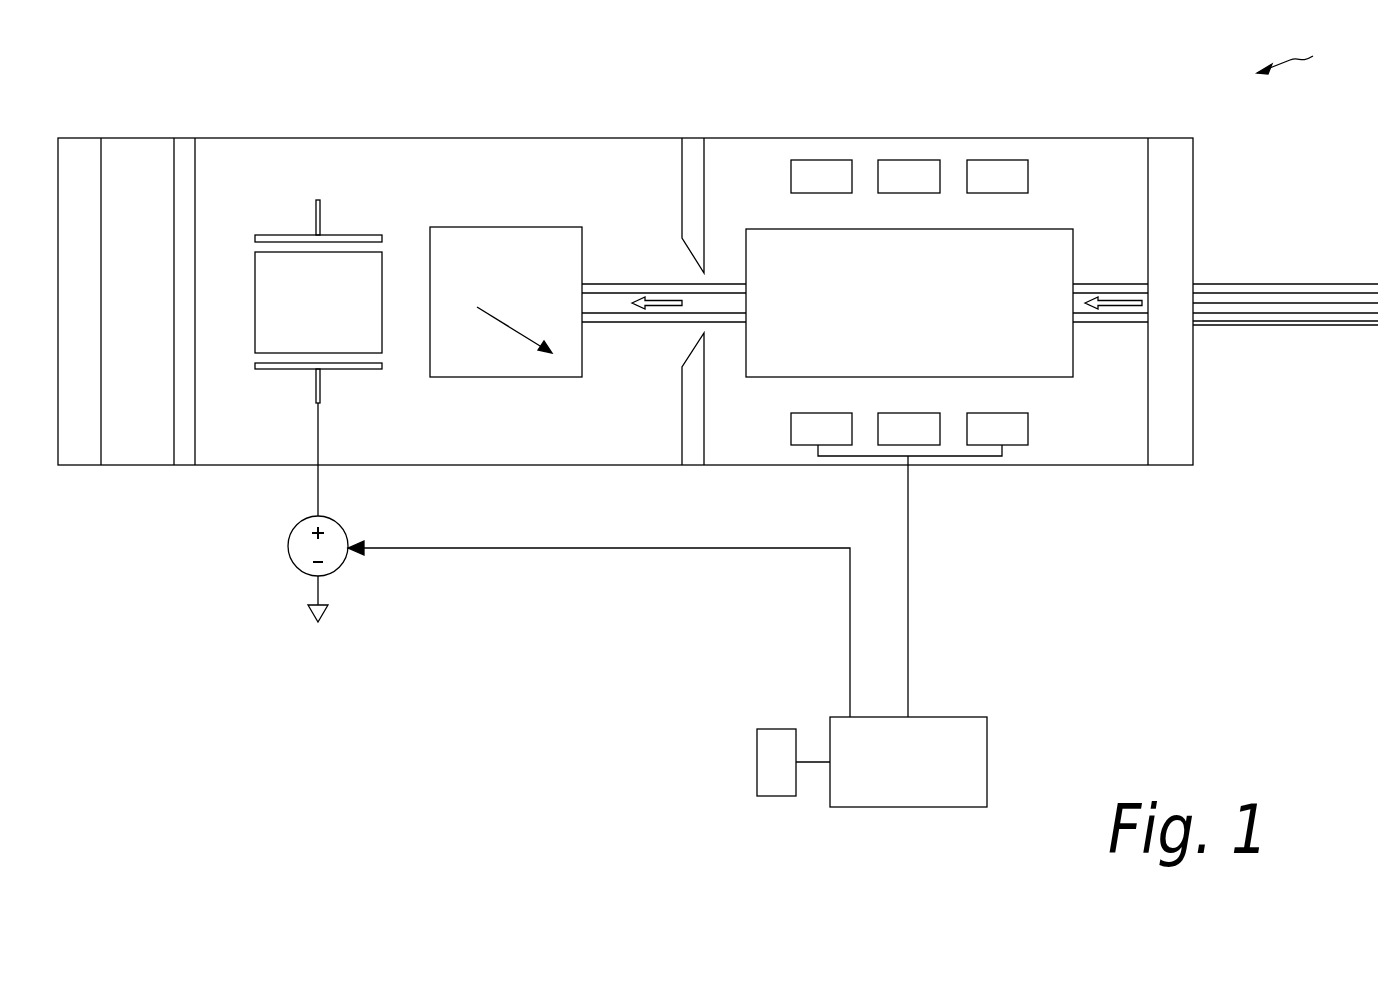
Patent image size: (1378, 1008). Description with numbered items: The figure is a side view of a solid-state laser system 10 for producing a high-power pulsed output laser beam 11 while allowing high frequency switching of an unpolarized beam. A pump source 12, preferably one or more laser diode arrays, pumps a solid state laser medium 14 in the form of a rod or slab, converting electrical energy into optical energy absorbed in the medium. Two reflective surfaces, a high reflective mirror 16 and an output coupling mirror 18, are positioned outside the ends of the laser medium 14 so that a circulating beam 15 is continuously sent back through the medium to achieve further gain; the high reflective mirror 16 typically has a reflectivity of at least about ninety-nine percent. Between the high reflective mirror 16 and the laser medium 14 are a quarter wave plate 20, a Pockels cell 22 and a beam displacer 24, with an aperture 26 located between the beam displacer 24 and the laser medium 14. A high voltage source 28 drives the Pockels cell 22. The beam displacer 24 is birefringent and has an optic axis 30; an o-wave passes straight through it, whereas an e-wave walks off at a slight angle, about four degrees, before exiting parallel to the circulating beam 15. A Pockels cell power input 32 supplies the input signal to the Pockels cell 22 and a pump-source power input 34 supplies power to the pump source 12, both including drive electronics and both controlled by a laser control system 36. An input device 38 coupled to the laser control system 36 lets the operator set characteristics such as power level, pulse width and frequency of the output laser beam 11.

The solid-state laser system 10 is at (1301, 58).
The output laser beam 11 is at (1339, 284).
The pump source 12 is at (902, 160).
The solid state laser medium 14 is at (1053, 367).
The circulating beam 15 is at (617, 284).
The high reflective mirror 16 is at (75, 142).
The output coupling mirror 18 is at (1170, 465).
The quarter wave plate 20 is at (183, 142).
The Pockels cell 22 is at (367, 252).
The beam displacer 24 is at (547, 227).
The aperture 26 is at (681, 427).
The high voltage source 28 is at (288, 546).
The optic axis 30 is at (502, 323).
The Pockels cell power input 32 is at (455, 548).
The pump-source power input 34 is at (908, 593).
The laser control system 36 is at (893, 807).
The input device 38 is at (768, 796).